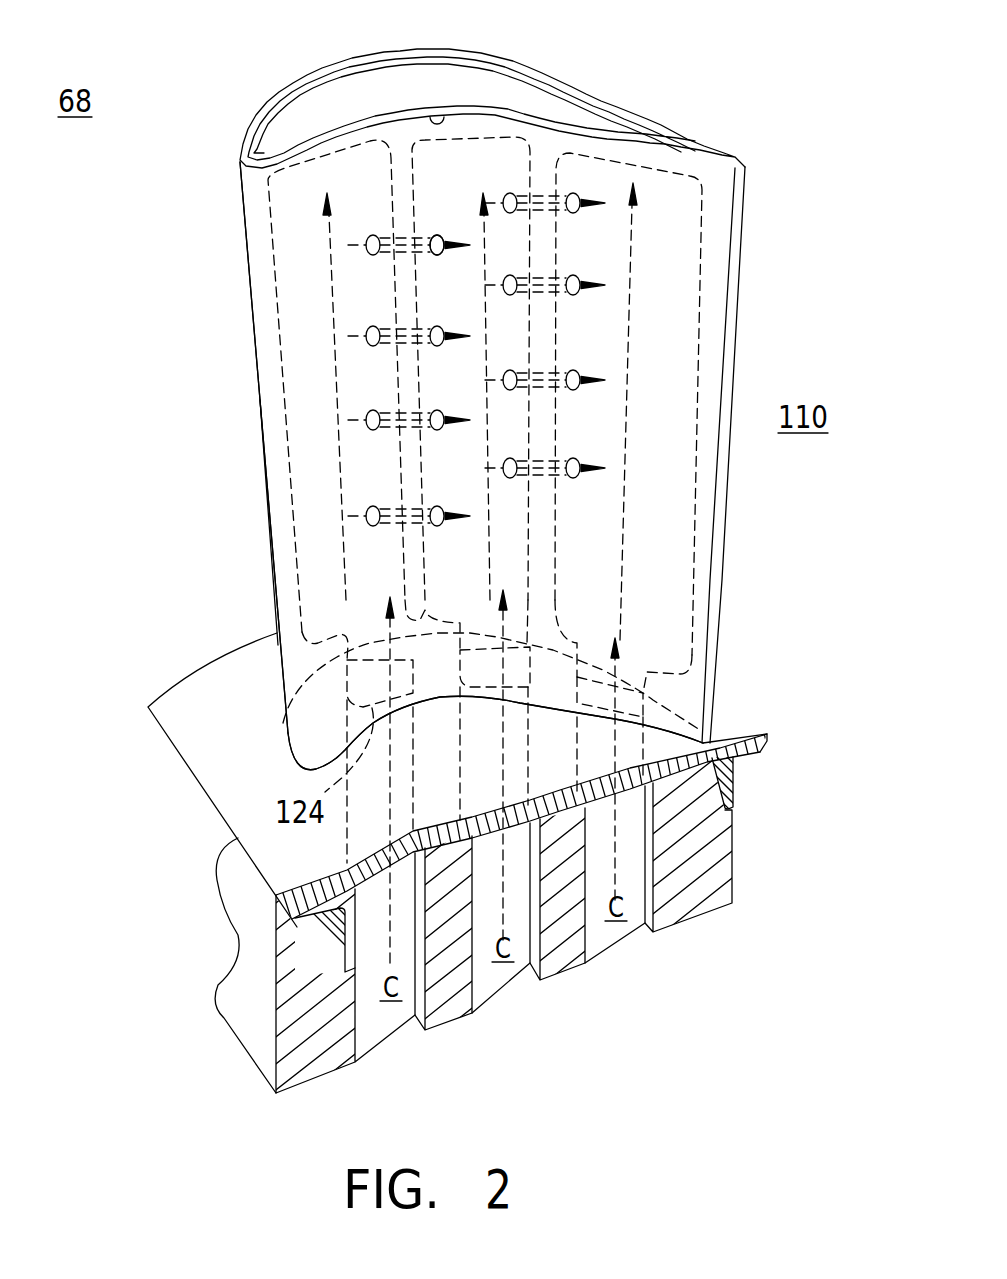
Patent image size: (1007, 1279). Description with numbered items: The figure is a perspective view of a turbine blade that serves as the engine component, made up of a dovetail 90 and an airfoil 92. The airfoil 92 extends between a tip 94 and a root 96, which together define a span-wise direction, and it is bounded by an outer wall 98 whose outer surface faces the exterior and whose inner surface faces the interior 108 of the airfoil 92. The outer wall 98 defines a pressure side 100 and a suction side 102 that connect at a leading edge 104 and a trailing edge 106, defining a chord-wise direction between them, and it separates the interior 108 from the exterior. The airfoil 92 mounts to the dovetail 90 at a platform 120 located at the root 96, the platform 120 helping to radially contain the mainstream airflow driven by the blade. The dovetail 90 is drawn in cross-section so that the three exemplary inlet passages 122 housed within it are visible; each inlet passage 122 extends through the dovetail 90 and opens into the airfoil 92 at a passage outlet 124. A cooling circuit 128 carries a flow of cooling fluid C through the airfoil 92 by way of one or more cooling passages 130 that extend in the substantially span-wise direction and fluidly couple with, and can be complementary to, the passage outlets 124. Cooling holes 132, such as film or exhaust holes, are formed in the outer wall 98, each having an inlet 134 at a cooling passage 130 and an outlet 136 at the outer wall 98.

The dovetail 90 is at (262, 954).
The airfoil 92 is at (218, 358).
The tip 94 is at (410, 85).
The root 96 is at (676, 714).
The outer wall 98 is at (259, 285).
The pressure side 100 is at (441, 118).
The suction side 102 is at (492, 54).
The leading edge 104 is at (272, 597).
The trailing edge 106 is at (716, 515).
The interior 108 is at (358, 171).
The platform 120 is at (203, 676).
The inlet passage 122 is at (615, 930).
The passage outlet 124 is at (491, 748).
The cooling circuit 128 is at (714, 156).
The cooling passage 130 is at (545, 93).
The cooling hole 132 is at (538, 498).
The inlet 134 is at (350, 247).
The outlet 136 is at (436, 236).